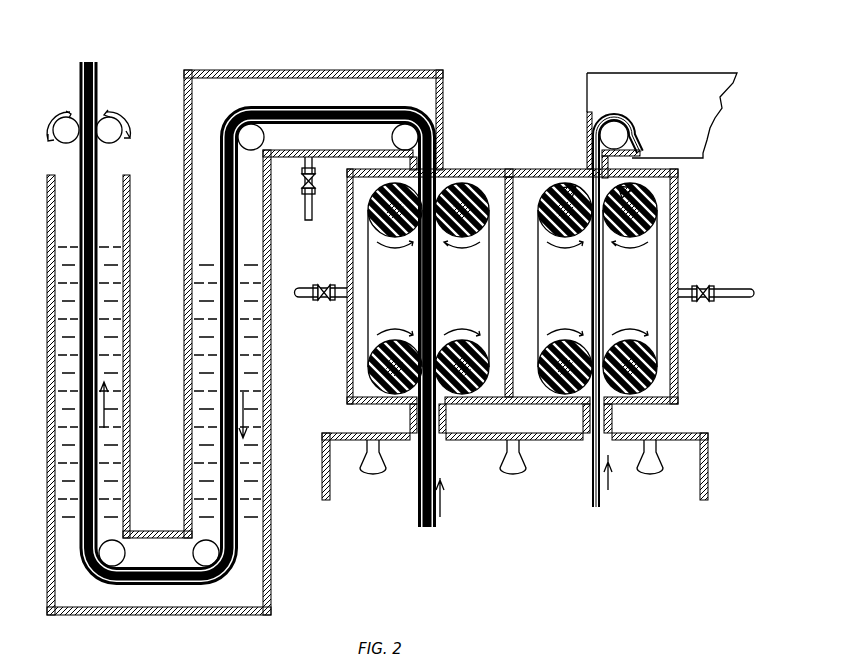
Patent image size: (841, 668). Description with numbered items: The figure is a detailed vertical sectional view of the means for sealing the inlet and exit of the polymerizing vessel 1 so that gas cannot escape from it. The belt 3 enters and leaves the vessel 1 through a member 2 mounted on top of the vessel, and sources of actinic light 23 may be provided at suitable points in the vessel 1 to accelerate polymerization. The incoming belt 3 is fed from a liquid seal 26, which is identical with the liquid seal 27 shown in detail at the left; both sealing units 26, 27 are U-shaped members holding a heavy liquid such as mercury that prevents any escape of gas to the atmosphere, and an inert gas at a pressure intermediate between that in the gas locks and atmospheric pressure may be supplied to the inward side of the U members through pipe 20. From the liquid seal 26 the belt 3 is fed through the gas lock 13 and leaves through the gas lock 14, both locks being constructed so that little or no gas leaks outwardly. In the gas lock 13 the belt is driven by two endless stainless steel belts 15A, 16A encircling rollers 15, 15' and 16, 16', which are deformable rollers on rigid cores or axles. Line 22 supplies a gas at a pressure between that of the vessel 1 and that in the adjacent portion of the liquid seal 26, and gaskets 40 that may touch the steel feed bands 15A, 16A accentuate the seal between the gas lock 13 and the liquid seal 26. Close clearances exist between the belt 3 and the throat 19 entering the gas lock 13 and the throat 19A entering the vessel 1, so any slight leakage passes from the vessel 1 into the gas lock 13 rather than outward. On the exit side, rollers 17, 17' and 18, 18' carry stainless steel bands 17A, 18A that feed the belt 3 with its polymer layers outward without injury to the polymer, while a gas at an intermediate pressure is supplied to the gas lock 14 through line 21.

The polymerizing vessel 1 is at (703, 466).
The sealing member 2 is at (680, 374).
The belt 3 is at (431, 528).
The gas lock 13 is at (679, 240).
The gas lock 14 is at (347, 252).
The roller 15 is at (556, 186).
The roller 16 is at (659, 215).
The roller 17 is at (370, 214).
The roller 18 is at (463, 186).
The throat 19 is at (608, 160).
The throat 19A is at (612, 418).
The pipe 20 is at (306, 204).
The line 21 is at (309, 300).
The line 22 is at (720, 299).
The source of actinic light 23 is at (376, 472).
The liquid seal 26 is at (626, 72).
The liquid seal 27 is at (249, 69).
The gasket 40 is at (561, 188).
The stainless steel band 17A is at (369, 282).
The stainless steel band 18A is at (489, 273).
The endless belt 15A is at (538, 273).
The endless belt 16A is at (657, 273).
The roller 17' is at (391, 379).
The roller 18' is at (464, 379).
The roller 15' is at (565, 379).
The roller 16' is at (646, 380).